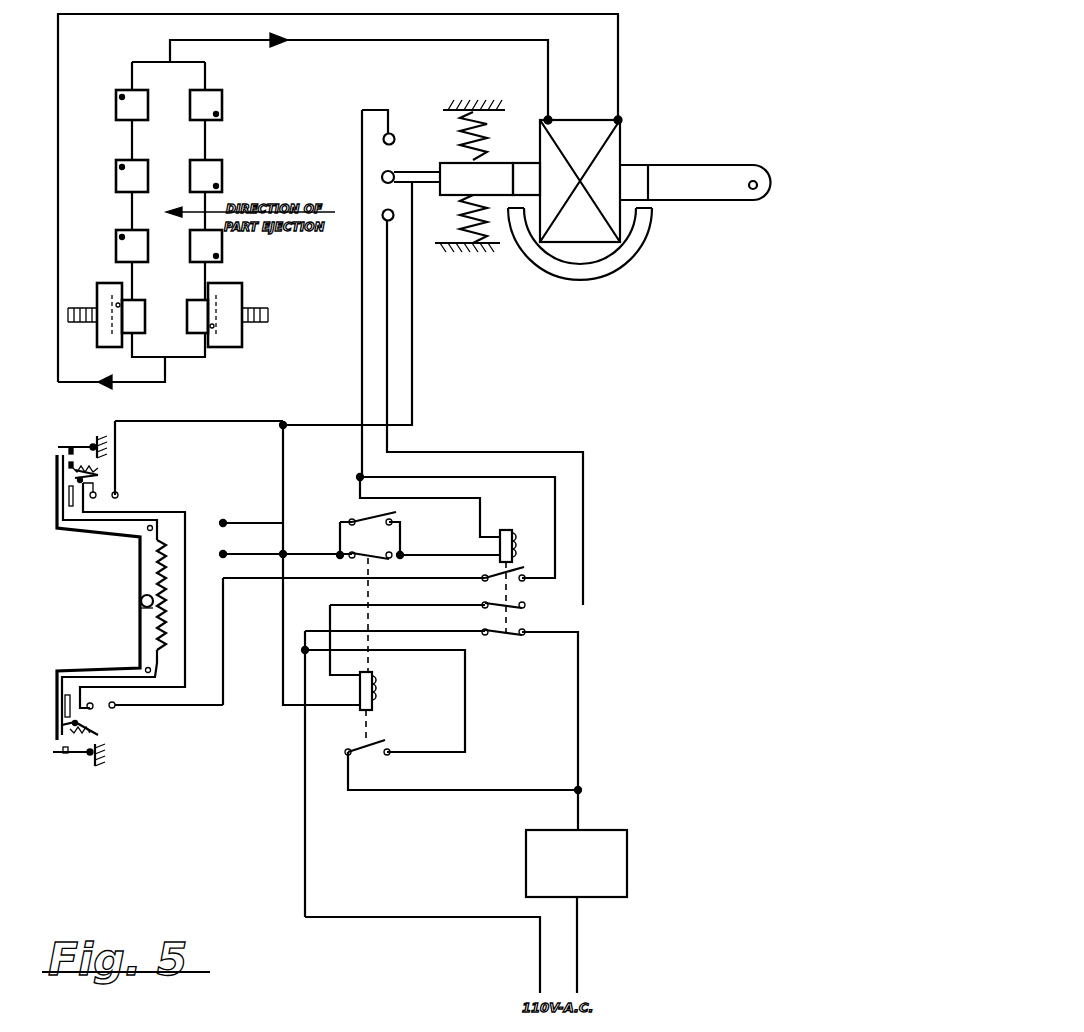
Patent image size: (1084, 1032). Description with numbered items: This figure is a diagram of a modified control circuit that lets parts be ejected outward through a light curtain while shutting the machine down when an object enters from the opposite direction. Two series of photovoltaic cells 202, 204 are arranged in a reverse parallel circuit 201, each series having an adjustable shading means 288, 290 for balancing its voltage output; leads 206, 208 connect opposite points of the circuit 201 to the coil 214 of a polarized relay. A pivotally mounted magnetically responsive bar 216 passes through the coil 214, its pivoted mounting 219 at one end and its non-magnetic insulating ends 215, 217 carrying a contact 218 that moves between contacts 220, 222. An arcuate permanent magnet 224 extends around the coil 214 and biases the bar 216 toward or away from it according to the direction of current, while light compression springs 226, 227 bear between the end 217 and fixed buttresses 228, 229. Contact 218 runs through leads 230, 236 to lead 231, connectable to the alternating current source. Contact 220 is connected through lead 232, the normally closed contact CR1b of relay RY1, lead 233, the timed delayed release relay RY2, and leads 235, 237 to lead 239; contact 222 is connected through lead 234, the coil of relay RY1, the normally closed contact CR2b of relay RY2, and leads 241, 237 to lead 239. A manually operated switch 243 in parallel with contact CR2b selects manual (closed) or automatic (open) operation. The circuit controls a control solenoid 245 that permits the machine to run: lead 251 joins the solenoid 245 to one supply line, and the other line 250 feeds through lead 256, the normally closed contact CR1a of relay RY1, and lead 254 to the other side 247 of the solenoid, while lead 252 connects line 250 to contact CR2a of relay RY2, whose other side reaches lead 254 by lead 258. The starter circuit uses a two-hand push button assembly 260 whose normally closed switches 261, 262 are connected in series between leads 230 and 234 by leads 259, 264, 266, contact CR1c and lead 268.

The reverse parallel circuit 201 is at (280, 172).
The series of photovoltaic cells 202 is at (132, 137).
The series of photovoltaic cells 204 is at (205, 137).
The lead 206 is at (345, 40).
The lead 208 is at (118, 14).
The polarized relay coil 214 is at (612, 156).
The end of bar 215 is at (723, 190).
The magnetically responsive bar 216 is at (637, 183).
The insulated end of bar 217 is at (457, 190).
The contact 218 is at (427, 168).
The pivoted mounting 219 is at (755, 180).
The contact 220 is at (383, 219).
The contact 222 is at (391, 133).
The arcuate permanent magnet 224 is at (626, 264).
The light compression spring 226 is at (490, 140).
The light compression spring 227 is at (500, 240).
The fixed buttress 228 is at (462, 252).
The fixed buttress 229 is at (490, 105).
The lead 230 is at (412, 337).
The lead 231 is at (224, 520).
The lead 232 is at (387, 385).
The lead 233 is at (408, 605).
The lead 234 is at (359, 353).
The lead 235 is at (276, 682).
The lead 236 is at (283, 450).
The lead 237 is at (258, 579).
The lead 239 is at (222, 553).
The lead 241 is at (308, 553).
The manually operated switch 243 is at (397, 513).
The control solenoid 245 is at (627, 866).
The other side of solenoid 247 is at (580, 829).
The line of A.C. source 250 is at (540, 963).
The lead 251 is at (578, 946).
The lead 252 is at (465, 701).
The lead 254 is at (578, 719).
The lead 256 is at (313, 630).
The lead 258 is at (441, 791).
The lead 259 is at (215, 412).
The push button assembly 260 is at (104, 605).
The normally closed switch 261 is at (112, 498).
The normally closed switch 262 is at (112, 708).
The lead 264 is at (186, 646).
The lead 266 is at (243, 655).
The lead 268 is at (555, 528).
The adjustable shading means 288 is at (100, 296).
The adjustable shading means 290 is at (233, 347).
The relay RY1 is at (507, 529).
The timed delayed release relay RY2 is at (373, 690).
The normally closed contact CR1a is at (519, 640).
The normally closed contact CR1b is at (531, 611).
The contact CR1c is at (518, 583).
The contact CR2a is at (380, 755).
The normally closed contact CR2b is at (390, 552).